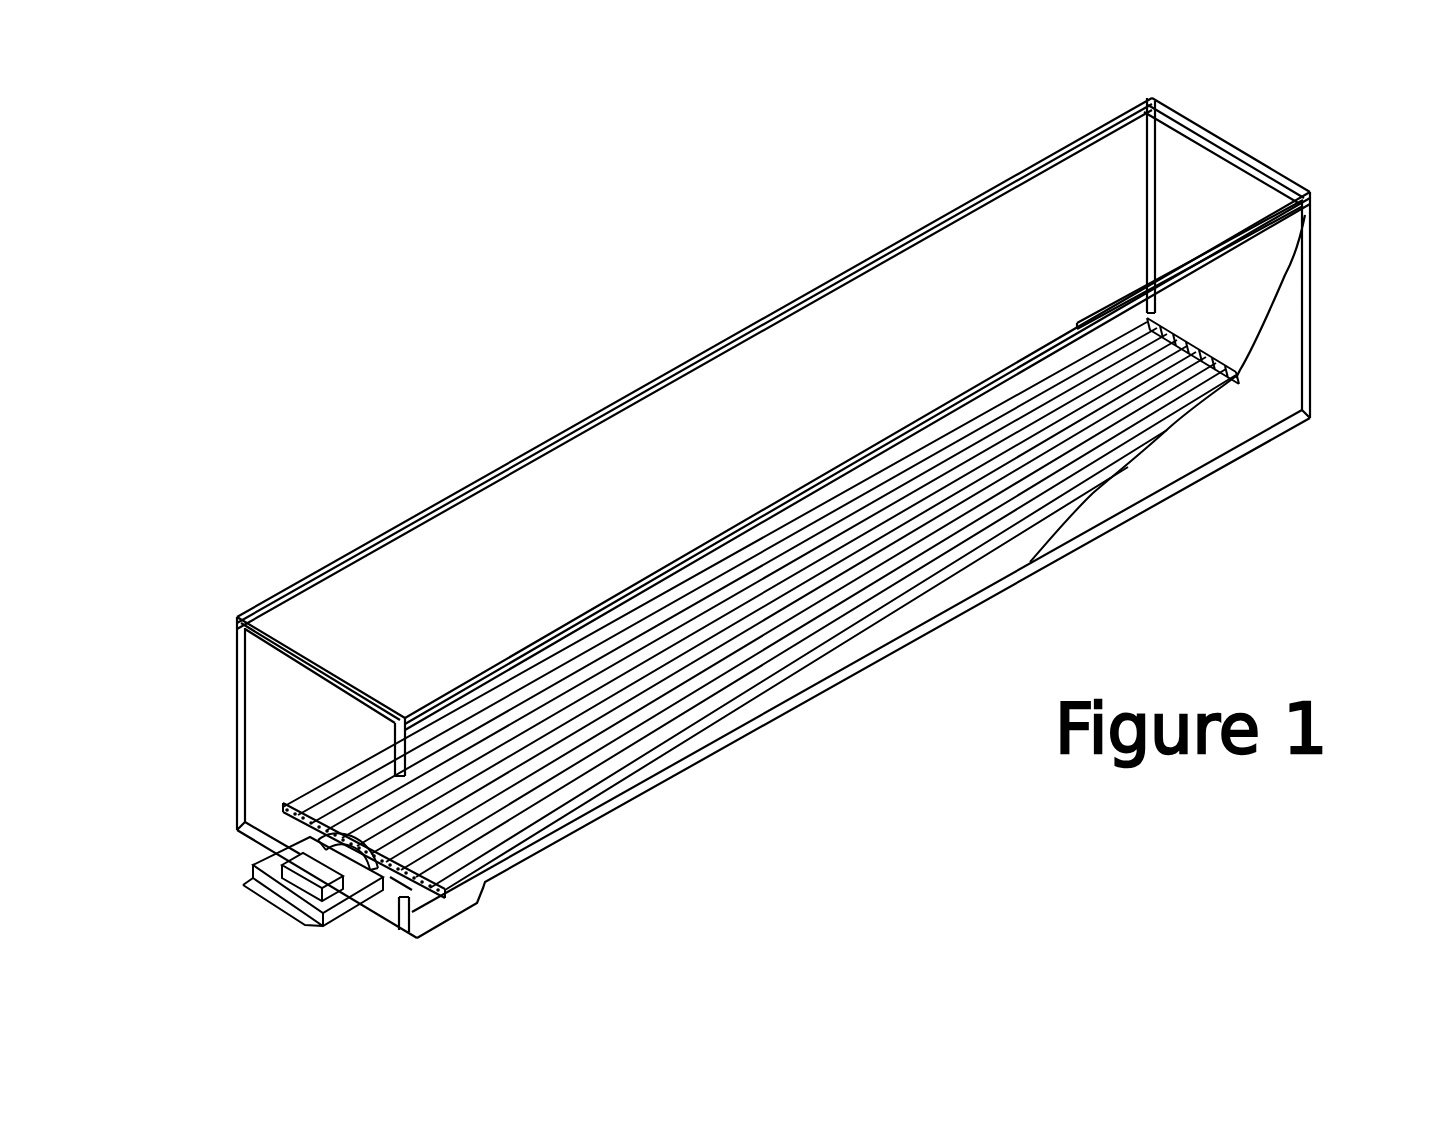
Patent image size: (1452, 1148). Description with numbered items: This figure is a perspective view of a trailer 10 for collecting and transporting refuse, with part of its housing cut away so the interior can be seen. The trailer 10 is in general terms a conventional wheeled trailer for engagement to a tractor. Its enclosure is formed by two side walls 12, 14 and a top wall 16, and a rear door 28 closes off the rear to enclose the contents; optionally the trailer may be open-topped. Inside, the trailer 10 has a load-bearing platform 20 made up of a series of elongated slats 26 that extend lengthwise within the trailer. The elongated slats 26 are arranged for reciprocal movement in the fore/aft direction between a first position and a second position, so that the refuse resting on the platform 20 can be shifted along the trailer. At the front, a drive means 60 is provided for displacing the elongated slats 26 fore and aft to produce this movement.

The trailer 10 is at (733, 226).
The side wall 12 is at (642, 437).
The side wall 14 is at (1270, 375).
The top wall 16 is at (1018, 200).
The load-bearing platform 20 is at (690, 703).
The elongated slats 26 is at (500, 797).
The rear door 28 is at (1205, 165).
The drive means 60 is at (248, 860).